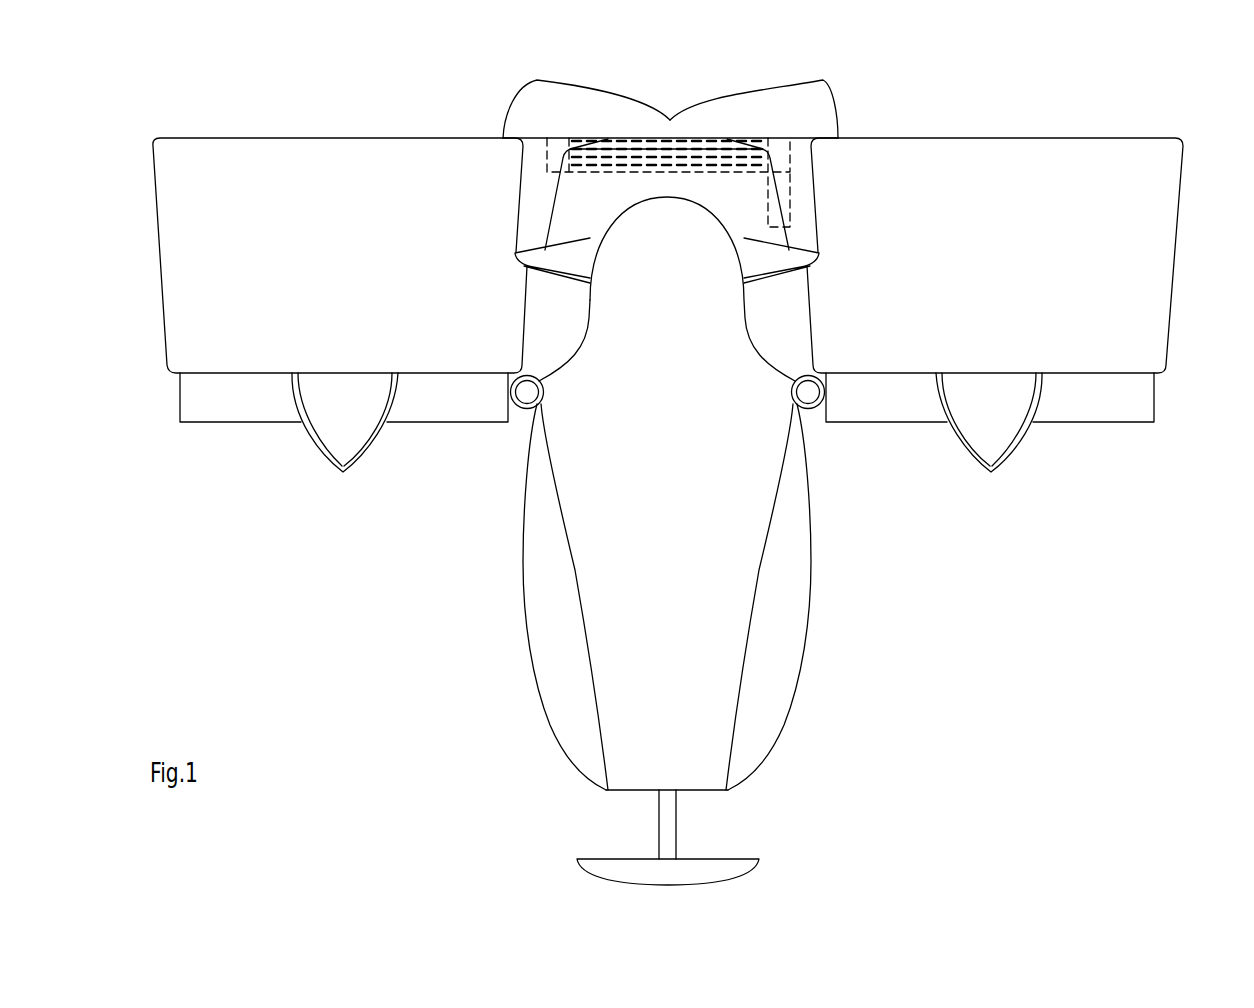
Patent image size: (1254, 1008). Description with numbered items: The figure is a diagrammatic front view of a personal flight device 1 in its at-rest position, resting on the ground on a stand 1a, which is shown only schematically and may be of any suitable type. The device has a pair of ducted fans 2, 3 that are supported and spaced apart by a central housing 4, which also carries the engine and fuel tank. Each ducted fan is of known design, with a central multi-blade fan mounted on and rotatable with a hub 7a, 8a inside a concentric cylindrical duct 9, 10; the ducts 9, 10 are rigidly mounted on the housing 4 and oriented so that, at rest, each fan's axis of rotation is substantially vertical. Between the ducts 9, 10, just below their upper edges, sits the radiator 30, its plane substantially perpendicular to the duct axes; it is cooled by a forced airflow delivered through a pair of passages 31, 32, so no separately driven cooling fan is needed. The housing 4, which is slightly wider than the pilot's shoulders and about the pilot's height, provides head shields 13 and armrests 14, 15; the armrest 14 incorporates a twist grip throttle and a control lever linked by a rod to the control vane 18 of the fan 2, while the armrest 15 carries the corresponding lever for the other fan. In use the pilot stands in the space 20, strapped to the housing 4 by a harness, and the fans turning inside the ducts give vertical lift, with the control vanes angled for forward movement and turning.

The personal flight device 1 is at (490, 113).
The stand 1a is at (760, 862).
The ducted fan 2 is at (327, 295).
The ducted fan 3 is at (1010, 292).
The central housing 4 is at (667, 289).
The hub 7a is at (355, 457).
The hub 8a is at (1003, 456).
The cylindrical duct 9 is at (340, 255).
The cylindrical duct 10 is at (995, 255).
The head shield 13 is at (667, 211).
The armrest 14 is at (545, 400).
The armrest 15 is at (788, 408).
The control vane 18 is at (243, 417).
The space 20 is at (703, 558).
The radiator 30 is at (607, 167).
The passage 31 is at (540, 90).
The passage 32 is at (805, 90).